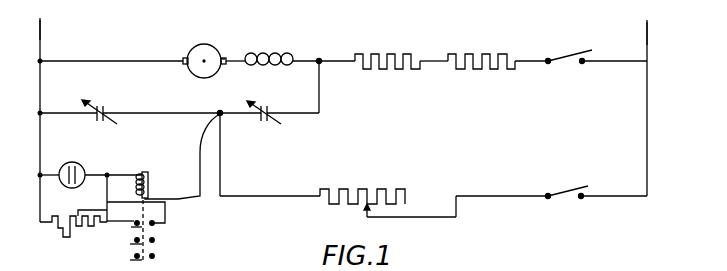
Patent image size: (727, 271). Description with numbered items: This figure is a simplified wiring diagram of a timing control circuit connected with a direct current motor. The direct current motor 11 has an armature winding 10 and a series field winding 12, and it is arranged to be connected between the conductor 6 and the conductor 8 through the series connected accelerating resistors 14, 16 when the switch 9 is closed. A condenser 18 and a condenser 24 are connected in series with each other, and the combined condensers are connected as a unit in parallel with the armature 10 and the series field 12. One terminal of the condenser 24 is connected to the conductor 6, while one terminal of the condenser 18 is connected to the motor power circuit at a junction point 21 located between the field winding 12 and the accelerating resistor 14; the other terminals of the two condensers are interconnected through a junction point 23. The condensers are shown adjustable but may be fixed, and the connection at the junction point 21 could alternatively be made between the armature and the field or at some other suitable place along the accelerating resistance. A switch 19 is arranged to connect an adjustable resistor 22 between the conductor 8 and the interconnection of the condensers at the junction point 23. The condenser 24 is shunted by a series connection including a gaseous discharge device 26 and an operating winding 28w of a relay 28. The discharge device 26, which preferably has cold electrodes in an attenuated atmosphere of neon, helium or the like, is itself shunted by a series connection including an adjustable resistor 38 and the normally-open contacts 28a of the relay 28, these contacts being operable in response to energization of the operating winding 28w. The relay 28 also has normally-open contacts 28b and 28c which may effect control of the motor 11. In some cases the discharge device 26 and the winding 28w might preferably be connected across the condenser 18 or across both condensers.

The conductor 6 is at (40, 28).
The conductor 8 is at (648, 36).
The switch 9 is at (580, 53).
The armature winding 10 is at (197, 45).
The direct current motor 11 is at (234, 37).
The series field winding 12 is at (262, 53).
The accelerating resistor 14 is at (408, 54).
The accelerating resistor 16 is at (504, 54).
The condenser 18 is at (268, 110).
The switch 19 is at (566, 190).
The junction point 21 is at (319, 58).
The adjustable resistor 22 is at (358, 190).
The junction point 23 is at (220, 112).
The condenser 24 is at (100, 108).
The gaseous discharge device 26 is at (79, 163).
The relay 28 is at (172, 229).
The operating winding 28w is at (150, 180).
The normally-open contacts 28a is at (155, 223).
The normally-open contacts 28b is at (155, 240).
The normally-open contacts 28c is at (155, 257).
The adjustable resistor 38 is at (73, 234).